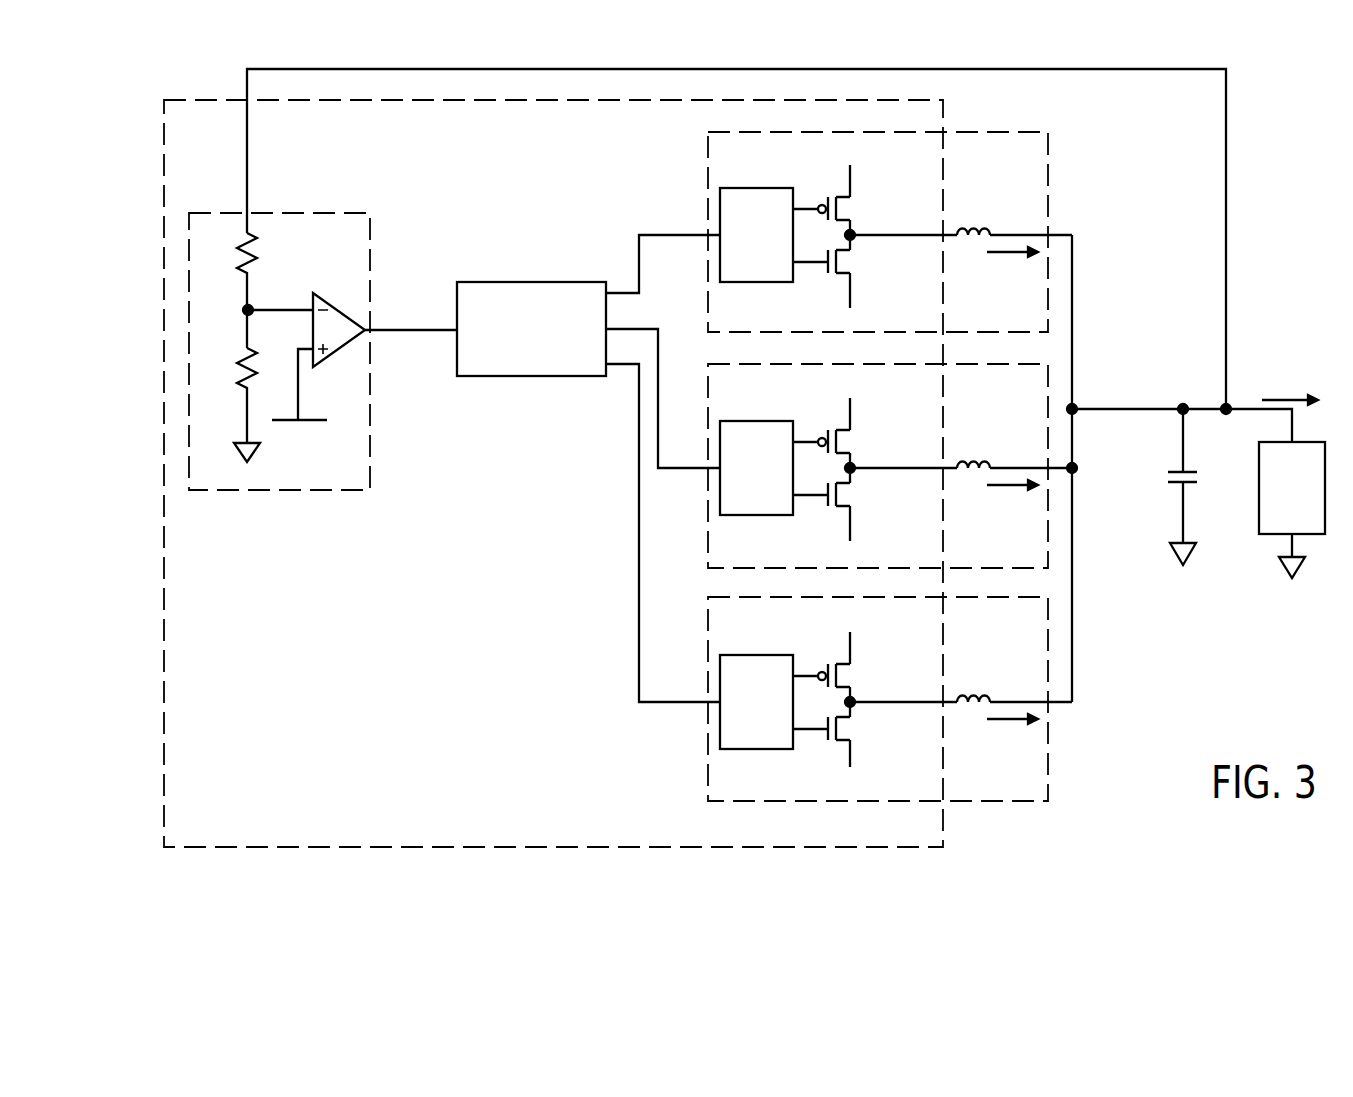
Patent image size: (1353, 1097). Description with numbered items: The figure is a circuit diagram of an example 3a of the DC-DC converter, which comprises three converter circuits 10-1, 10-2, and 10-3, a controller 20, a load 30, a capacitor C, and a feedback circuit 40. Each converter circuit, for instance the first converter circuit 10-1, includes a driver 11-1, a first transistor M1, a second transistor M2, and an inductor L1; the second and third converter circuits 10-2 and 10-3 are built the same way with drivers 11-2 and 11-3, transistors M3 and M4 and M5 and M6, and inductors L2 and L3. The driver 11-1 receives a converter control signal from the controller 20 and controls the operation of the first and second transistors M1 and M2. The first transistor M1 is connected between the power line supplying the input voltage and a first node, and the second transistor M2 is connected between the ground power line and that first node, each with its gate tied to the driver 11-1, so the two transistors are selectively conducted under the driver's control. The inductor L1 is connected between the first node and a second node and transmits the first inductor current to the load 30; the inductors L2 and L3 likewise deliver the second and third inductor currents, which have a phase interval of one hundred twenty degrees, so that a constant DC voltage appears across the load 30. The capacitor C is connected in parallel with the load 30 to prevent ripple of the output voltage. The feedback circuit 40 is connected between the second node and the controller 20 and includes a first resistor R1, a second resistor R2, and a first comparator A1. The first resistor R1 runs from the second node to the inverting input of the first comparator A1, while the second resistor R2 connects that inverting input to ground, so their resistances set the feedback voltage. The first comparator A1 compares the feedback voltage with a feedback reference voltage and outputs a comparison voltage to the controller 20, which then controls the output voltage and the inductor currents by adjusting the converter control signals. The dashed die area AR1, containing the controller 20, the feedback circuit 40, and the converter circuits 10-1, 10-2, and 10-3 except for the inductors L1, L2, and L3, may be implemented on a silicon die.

The DC-DC converter example 3a is at (1272, 88).
The die area AR1 is at (943, 105).
The feedback circuit 40 is at (335, 213).
The first resistor R1 is at (232, 290).
The second resistor R2 is at (234, 405).
The first comparator A1 is at (322, 293).
The controller 20 is at (575, 282).
The converter circuit 10-1 is at (708, 165).
The converter circuit 10-2 is at (708, 523).
The converter circuit 10-3 is at (720, 801).
The driver 11-1 is at (745, 188).
The driver 11-2 is at (745, 421).
The driver 11-3 is at (745, 655).
The first transistor M1 is at (835, 209).
The second transistor M2 is at (835, 263).
The transistor M3 is at (835, 442).
The transistor M4 is at (835, 496).
The transistor M5 is at (835, 676).
The transistor M6 is at (835, 730).
The inductor L1 is at (975, 214).
The inductor L2 is at (975, 447).
The inductor L3 is at (975, 681).
The capacitor C is at (1192, 487).
The load 30 is at (1265, 534).